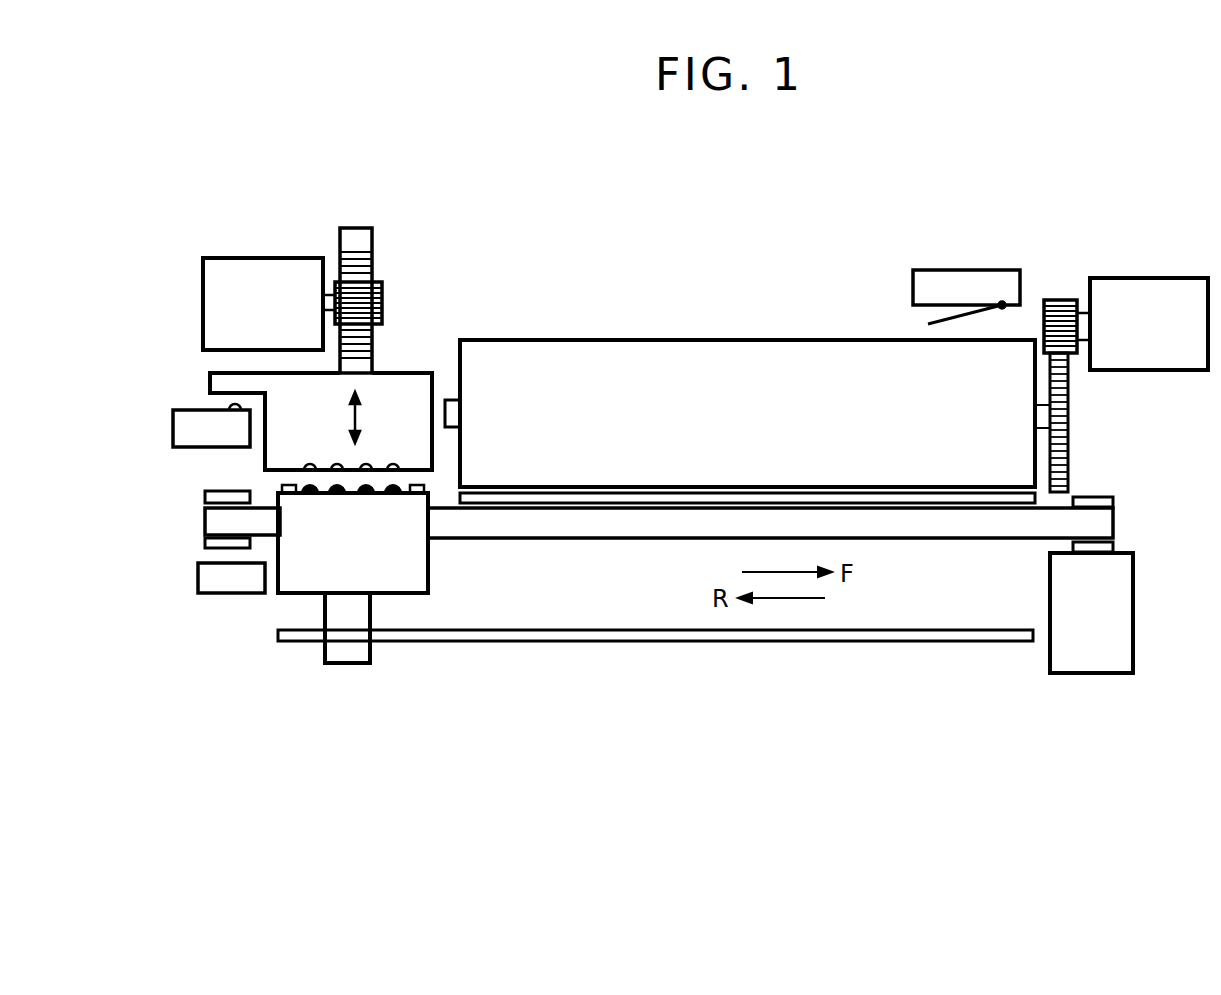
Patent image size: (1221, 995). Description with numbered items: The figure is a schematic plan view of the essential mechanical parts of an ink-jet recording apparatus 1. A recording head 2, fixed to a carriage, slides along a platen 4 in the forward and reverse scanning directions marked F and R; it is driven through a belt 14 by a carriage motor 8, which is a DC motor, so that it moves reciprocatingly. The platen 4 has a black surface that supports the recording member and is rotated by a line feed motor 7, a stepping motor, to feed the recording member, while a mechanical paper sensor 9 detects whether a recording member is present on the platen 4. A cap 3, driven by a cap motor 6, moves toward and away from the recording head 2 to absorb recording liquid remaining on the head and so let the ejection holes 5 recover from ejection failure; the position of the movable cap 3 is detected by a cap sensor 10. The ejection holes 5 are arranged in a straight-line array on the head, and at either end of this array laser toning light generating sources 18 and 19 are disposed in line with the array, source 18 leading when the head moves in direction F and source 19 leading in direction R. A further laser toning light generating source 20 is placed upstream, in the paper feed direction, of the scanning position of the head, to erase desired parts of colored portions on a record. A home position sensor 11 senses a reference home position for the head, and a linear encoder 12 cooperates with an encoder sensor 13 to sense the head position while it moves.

The ink-jet recording apparatus 1 is at (800, 300).
The recording head 2 is at (287, 595).
The cap 3 is at (417, 370).
The platen 4 is at (571, 340).
The ejection holes 5 is at (308, 498).
The cap motor 6 is at (273, 258).
The line feed motor 7 is at (1128, 278).
The carriage motor 8 is at (1096, 675).
The paper sensor 9 is at (933, 270).
The cap sensor 10 is at (185, 410).
The home position sensor 11 is at (240, 593).
The linear encoder 12 is at (831, 643).
The encoder sensor 13 is at (355, 665).
The belt 14 is at (1106, 524).
The toning light generating source 18 is at (420, 486).
The toning light generating source 19 is at (284, 488).
The toning light generating source 20 is at (998, 493).